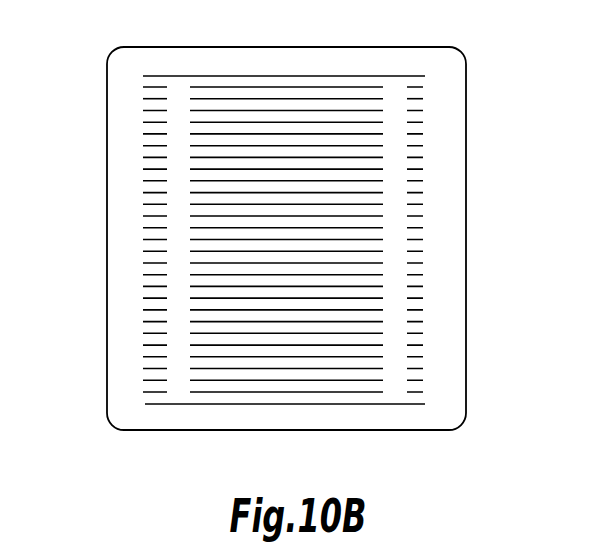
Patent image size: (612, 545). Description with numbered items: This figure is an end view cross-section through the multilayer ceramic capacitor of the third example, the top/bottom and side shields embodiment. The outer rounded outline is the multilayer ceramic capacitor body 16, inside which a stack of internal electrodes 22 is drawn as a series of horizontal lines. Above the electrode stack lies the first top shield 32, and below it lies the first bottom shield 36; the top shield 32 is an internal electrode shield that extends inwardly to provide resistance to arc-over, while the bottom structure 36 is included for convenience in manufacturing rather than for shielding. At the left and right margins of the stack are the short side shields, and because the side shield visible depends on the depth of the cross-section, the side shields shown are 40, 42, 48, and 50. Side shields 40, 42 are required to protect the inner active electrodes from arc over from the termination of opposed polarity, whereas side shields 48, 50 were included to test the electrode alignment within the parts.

The multilayer ceramic capacitor body 16 is at (210, 46).
The fins 22 is at (353, 87).
The first top shield 32 is at (276, 72).
The first bottom shield 36 is at (208, 404).
The side shield 40 is at (147, 87).
The side shield 42 is at (420, 86).
The side shield 48 is at (147, 98).
The side shield 50 is at (420, 99).